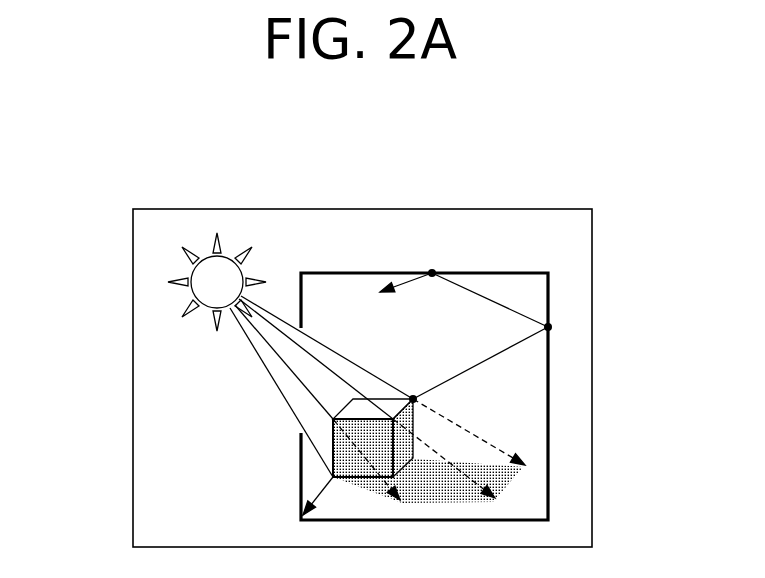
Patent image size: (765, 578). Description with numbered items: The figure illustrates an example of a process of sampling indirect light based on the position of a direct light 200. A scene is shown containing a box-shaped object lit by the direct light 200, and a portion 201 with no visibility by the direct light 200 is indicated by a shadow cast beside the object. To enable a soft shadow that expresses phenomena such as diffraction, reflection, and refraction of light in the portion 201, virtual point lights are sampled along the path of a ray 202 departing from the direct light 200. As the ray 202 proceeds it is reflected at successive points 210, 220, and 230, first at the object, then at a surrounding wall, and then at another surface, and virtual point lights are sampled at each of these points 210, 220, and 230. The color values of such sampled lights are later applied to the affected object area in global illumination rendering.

The direct light 200 is at (205, 282).
The portion with no visibility by direct light 201 is at (500, 477).
The ray 202 is at (413, 280).
The point 210 is at (413, 399).
The point 220 is at (548, 327).
The point 230 is at (432, 273).